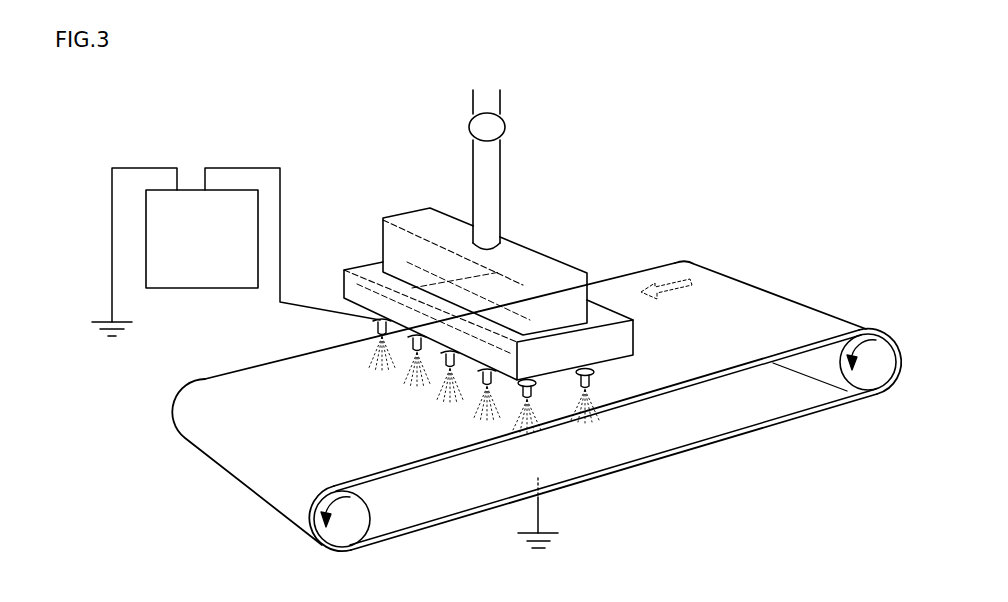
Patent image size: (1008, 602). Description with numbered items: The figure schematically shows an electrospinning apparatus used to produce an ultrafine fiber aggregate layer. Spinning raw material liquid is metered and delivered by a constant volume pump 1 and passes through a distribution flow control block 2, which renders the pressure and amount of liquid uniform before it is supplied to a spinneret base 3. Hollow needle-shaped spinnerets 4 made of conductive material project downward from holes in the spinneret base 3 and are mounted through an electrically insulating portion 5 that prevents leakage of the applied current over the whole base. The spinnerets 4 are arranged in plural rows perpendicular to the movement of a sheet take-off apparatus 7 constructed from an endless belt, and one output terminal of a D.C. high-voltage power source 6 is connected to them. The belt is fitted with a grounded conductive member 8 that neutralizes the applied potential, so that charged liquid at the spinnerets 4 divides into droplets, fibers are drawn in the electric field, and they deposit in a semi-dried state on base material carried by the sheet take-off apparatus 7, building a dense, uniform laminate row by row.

The constant volume pump 1 is at (500, 132).
The distribution flow control block 2 is at (540, 254).
The spinneret base 3 is at (603, 312).
The spinnerets 4 is at (378, 322).
The electrically insulating portion 5 is at (410, 222).
The power supply 6 is at (195, 193).
The sheet take-off apparatus 7 is at (380, 478).
The conductive member 8 is at (428, 443).